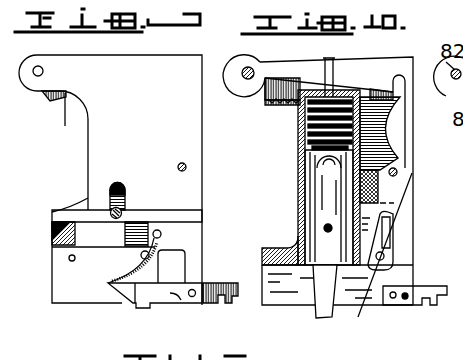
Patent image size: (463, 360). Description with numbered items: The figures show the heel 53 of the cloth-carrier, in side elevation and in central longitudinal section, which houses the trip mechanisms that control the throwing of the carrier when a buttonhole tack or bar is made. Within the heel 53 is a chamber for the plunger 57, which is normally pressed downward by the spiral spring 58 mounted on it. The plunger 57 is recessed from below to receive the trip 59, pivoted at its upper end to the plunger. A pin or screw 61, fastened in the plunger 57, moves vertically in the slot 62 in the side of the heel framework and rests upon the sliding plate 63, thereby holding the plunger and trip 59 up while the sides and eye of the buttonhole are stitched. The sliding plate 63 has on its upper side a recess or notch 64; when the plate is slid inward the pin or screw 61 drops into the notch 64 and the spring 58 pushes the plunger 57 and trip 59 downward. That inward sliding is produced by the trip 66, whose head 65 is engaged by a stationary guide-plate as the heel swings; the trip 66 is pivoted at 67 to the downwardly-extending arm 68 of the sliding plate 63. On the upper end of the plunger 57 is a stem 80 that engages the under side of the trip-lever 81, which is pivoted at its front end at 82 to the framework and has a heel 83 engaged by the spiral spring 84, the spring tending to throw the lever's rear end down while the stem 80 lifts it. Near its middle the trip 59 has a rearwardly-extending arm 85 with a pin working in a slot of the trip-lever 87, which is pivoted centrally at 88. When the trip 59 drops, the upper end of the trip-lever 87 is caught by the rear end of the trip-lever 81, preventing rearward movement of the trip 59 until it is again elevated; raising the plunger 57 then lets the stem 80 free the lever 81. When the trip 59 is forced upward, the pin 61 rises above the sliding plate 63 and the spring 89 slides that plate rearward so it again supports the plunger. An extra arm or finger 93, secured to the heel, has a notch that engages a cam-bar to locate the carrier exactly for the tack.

In FIG. 9, the heel 53 is at (110, 180).
In FIG. 10, the plunger 57 is at (314, 194).
In FIG. 10, the spiral spring 58 is at (300, 128).
In FIG. 9, the trip 59 is at (143, 305).
In FIG. 10, the trip 59 is at (320, 310).
In FIG. 9, the pin or screw 61 is at (108, 210).
In FIG. 9, the slot 62 is at (127, 197).
In FIG. 9, the sliding plate 63 is at (186, 237).
In FIG. 9, the recess or notch 64 is at (140, 230).
In FIG. 9, the head 65 is at (128, 290).
In FIG. 9, the trip 66 is at (165, 287).
In FIG. 9, the pivot 67 is at (194, 297).
In FIG. 9, the downwardly-extending arm 68 is at (187, 270).
In FIG. 10, the stem 80 is at (333, 90).
In FIG. 10, the trip-lever 81 is at (262, 63).
In FIG. 9, the pivot 82 is at (44, 71).
In FIG. 10, the pivot 82 is at (243, 78).
In FIG. 9, the heel 83 is at (50, 94).
In FIG. 10, the heel 83 is at (257, 100).
In FIG. 9, the spiral spring 84 is at (59, 123).
In FIG. 10, the rearwardly-extending arm 85 is at (366, 300).
In FIG. 10, the trip-lever 87 is at (400, 153).
In FIG. 10, the pivot 88 is at (399, 173).
In FIG. 9, the spring 89 is at (138, 273).
In FIG. 9, the arm or finger 93 is at (228, 303).
In FIG. 10, the arm or finger 93 is at (432, 285).